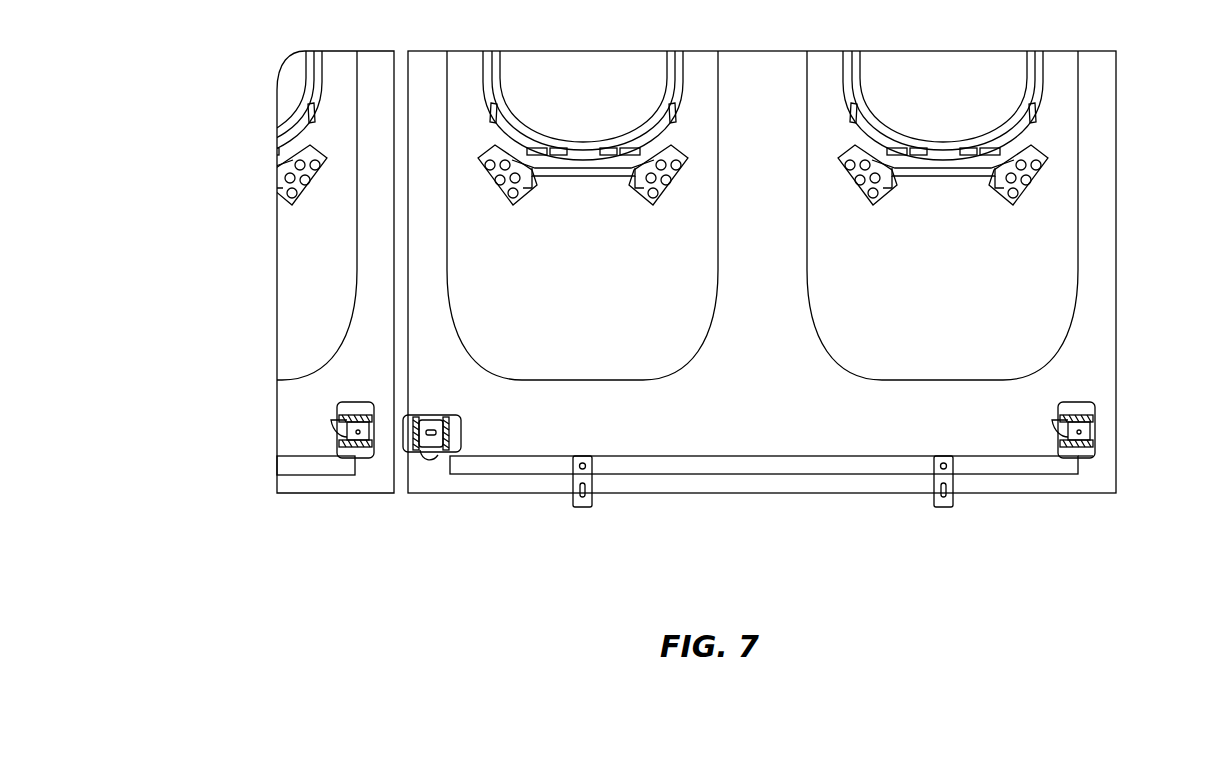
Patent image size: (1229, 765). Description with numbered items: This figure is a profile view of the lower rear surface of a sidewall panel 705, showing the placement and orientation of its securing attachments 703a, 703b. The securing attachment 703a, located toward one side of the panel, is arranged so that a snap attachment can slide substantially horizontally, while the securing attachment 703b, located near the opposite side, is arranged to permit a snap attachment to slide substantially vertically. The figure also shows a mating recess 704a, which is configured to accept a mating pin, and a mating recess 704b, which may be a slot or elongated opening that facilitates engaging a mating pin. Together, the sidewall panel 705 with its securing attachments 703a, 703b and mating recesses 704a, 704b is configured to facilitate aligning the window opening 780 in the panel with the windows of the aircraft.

The window opening 780 is at (1000, 83).
The sidewall panel 705 is at (1093, 355).
The mating recess 704a is at (1080, 431).
The securing attachment 703a is at (1083, 452).
The securing attachment 703b is at (413, 438).
The mating recess 704b is at (438, 450).